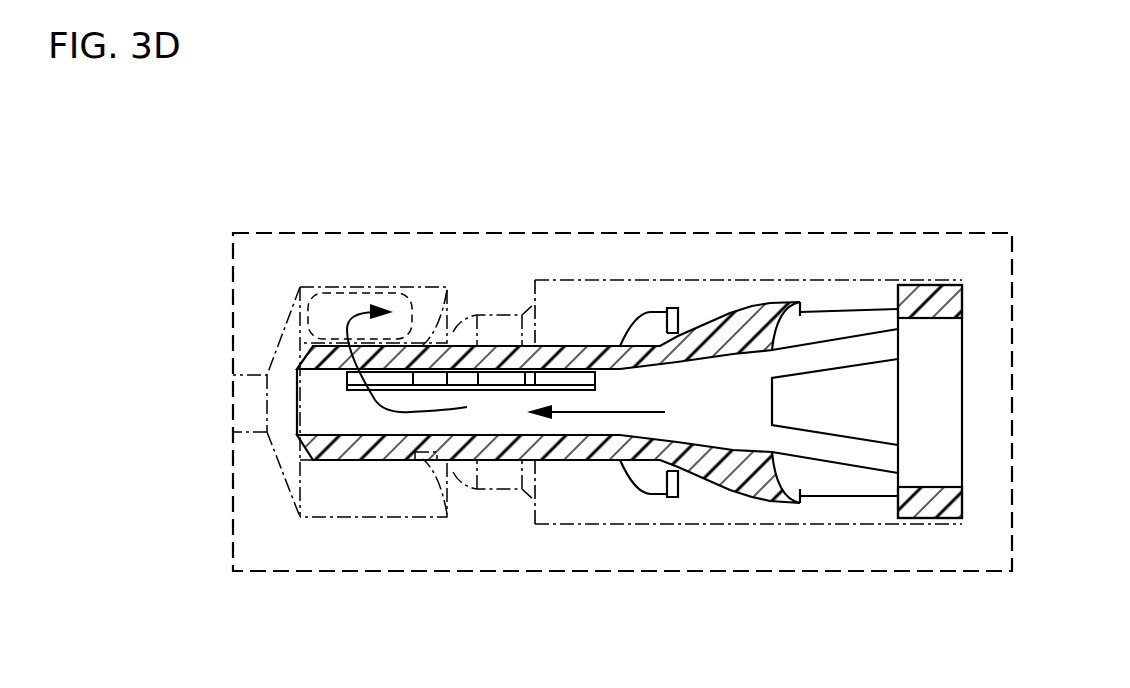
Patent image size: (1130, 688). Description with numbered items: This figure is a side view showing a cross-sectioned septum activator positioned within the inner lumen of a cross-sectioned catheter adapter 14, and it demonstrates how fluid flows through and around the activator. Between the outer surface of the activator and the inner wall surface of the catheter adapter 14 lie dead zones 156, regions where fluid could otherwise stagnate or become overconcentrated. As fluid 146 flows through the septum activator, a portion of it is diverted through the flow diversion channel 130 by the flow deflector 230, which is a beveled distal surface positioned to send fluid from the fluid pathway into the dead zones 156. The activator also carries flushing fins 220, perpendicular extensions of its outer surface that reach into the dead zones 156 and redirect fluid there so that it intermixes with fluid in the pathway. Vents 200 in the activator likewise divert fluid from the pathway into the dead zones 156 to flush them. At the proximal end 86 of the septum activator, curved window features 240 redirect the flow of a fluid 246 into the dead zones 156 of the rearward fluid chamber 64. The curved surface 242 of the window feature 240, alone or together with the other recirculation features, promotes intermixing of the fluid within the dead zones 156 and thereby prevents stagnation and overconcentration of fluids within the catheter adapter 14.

The catheter adapter 14 is at (458, 257).
The rearward fluid chamber 64 is at (880, 233).
The proximal end 86 is at (937, 272).
The flow diversion channel 130 is at (570, 378).
The fluid 146 is at (380, 408).
The dead zones 156 is at (327, 303).
The vents 200 is at (862, 487).
The flushing fins 220 is at (652, 325).
The flow deflector 230 is at (340, 355).
The curved window features 240 is at (842, 325).
The curved surface 242 is at (785, 495).
The fluid 246 is at (843, 298).